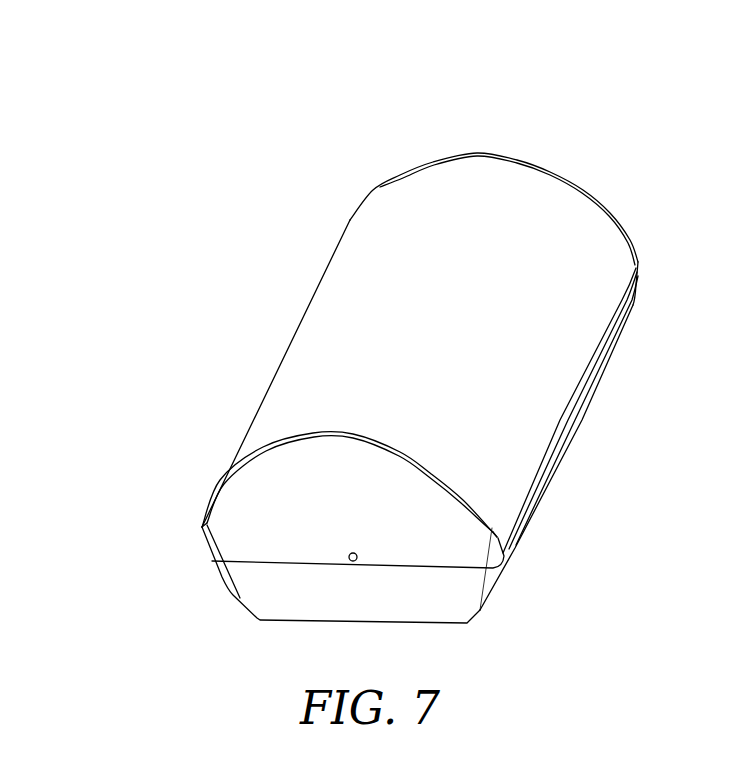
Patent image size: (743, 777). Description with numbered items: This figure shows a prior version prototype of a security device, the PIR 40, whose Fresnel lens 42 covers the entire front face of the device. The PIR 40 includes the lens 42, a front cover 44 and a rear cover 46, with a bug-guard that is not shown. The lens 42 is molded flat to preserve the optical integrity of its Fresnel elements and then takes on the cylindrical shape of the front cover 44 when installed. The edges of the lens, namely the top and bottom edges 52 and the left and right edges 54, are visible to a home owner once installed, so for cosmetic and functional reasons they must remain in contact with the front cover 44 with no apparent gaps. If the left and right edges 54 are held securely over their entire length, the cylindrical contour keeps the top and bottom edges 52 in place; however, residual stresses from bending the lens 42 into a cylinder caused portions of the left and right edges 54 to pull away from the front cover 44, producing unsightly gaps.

The PIR 40 is at (294, 139).
The lens 42 is at (621, 245).
The front cover 44 is at (278, 498).
The rear cover 46 is at (467, 592).
The top and bottom edges of the lens 52 is at (515, 158).
The left and right edges of the lens 54 is at (328, 273).